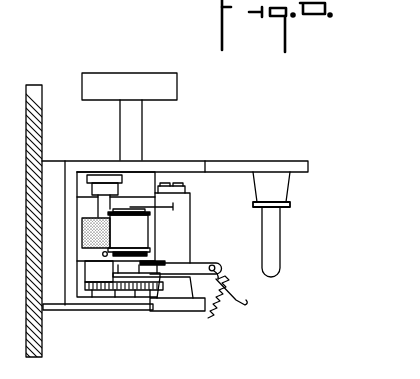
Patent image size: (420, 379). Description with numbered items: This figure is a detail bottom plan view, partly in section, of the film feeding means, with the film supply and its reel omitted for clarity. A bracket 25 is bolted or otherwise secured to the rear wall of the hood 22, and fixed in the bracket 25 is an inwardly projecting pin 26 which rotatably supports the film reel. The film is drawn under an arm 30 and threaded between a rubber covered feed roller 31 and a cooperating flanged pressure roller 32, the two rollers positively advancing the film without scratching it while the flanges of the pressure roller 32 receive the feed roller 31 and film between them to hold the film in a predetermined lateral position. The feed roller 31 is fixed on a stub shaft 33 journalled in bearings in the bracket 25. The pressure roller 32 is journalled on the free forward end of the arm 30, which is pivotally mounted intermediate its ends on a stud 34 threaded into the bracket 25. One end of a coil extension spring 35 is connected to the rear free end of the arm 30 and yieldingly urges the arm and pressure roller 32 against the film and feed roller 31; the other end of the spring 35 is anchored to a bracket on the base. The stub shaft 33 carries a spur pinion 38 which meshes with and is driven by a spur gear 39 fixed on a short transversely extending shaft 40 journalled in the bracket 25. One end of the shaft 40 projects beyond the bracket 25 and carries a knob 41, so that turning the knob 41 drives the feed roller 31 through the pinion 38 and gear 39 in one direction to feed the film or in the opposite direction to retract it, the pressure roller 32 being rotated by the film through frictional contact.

The hood 22 is at (43, 117).
The bracket 25 is at (246, 148).
The pin 26 is at (270, 242).
The arm 30 is at (190, 246).
The feed roller 31 is at (83, 233).
The pressure roller 32 is at (138, 232).
The stub shaft 33 is at (102, 200).
The stud 34 is at (187, 188).
The coil extension spring 35 is at (237, 283).
The spur pinion 38 is at (100, 291).
The spur gear 39 is at (138, 291).
The shaft 40 is at (133, 142).
The knob 41 is at (168, 88).